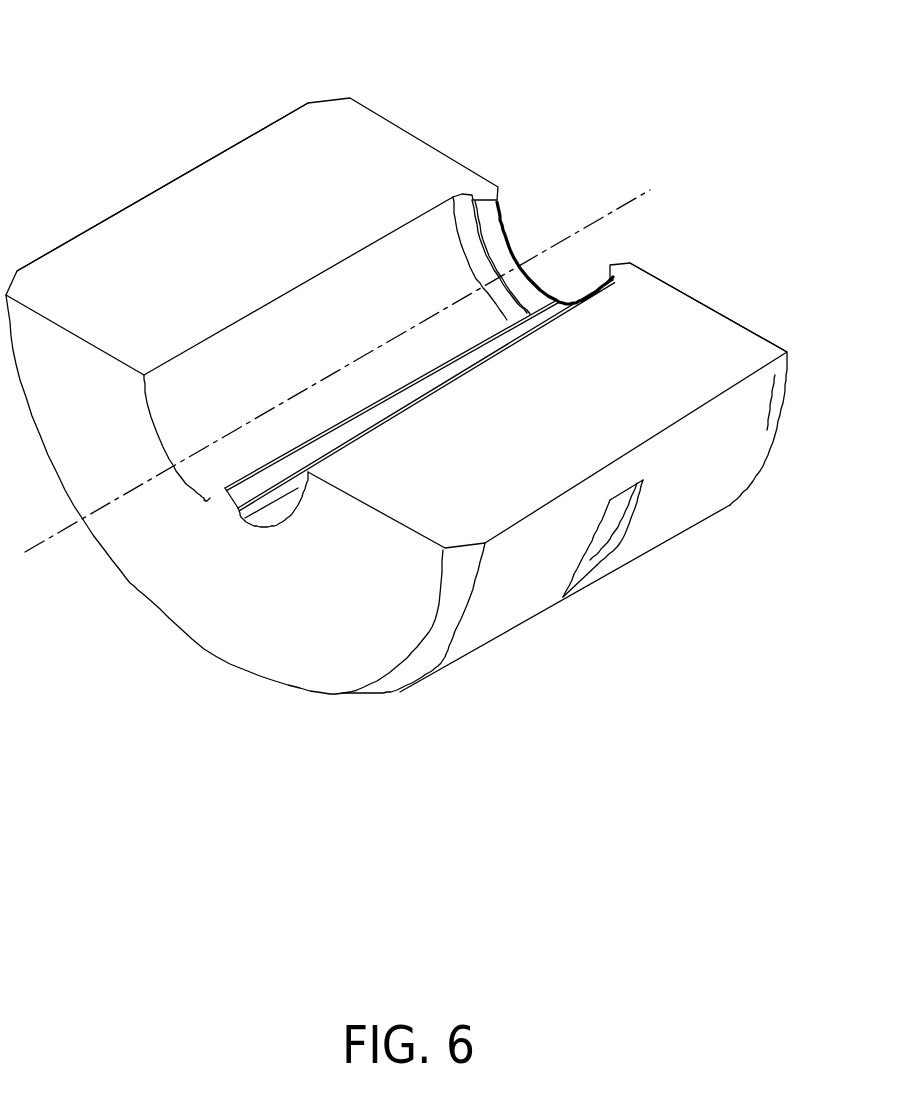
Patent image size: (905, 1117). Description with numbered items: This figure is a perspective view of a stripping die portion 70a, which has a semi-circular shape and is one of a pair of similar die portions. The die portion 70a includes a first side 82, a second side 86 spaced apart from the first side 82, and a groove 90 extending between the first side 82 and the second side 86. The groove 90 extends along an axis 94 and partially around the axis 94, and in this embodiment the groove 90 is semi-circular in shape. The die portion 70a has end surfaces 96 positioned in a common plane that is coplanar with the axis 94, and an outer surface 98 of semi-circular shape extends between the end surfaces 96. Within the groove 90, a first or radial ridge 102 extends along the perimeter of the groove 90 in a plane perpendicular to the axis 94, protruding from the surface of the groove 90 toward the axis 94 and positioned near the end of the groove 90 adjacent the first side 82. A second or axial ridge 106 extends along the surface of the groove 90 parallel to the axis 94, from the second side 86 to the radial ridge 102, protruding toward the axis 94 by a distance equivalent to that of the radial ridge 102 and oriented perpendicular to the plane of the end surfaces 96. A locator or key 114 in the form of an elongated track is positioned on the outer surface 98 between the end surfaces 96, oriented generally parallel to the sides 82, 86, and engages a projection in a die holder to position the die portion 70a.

The die portion 70a is at (404, 397).
The first side 82 is at (764, 377).
The second side 86 is at (268, 405).
The groove 90 is at (252, 202).
The axis 94 is at (337, 343).
The end surfaces 96 is at (402, 183).
The outer surface 98 is at (520, 471).
The radial ridge 102 is at (470, 344).
The axial ridge 106 is at (148, 506).
The key 114 is at (603, 581).